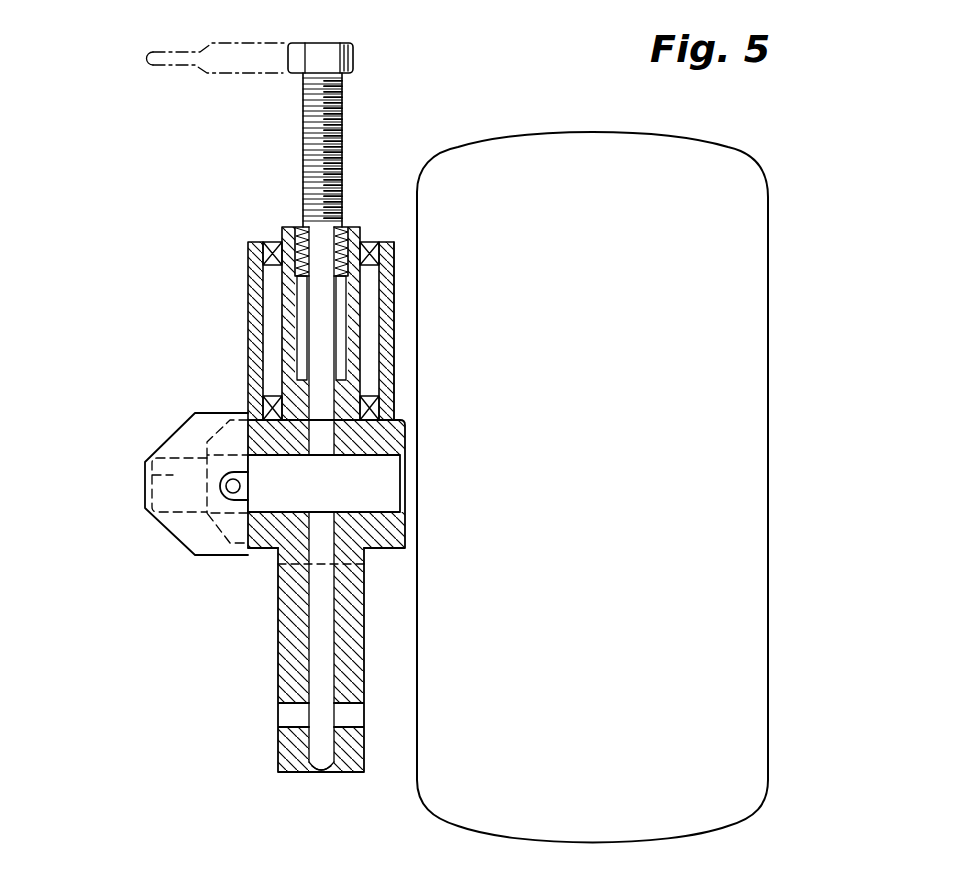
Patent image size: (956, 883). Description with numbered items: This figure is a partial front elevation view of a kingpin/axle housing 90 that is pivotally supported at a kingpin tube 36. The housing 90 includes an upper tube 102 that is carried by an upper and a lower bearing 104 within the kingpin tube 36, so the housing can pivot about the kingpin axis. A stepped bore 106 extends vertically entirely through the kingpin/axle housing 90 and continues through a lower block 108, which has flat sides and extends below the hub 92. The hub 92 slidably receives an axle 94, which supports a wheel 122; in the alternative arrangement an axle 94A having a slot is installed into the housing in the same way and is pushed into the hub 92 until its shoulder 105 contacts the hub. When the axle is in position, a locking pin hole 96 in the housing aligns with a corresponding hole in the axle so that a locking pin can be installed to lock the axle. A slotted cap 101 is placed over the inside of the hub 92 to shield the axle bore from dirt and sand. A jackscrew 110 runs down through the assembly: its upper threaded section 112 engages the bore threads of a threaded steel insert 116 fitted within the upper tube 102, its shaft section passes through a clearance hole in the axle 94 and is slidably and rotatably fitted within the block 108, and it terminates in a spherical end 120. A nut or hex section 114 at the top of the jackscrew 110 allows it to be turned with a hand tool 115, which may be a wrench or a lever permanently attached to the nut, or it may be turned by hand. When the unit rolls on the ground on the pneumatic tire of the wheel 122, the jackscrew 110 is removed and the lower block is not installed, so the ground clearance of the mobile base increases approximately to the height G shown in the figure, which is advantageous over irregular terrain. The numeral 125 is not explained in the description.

The kingpin tube 36 is at (256, 334).
The kingpin/axle housing 90 is at (238, 618).
The hub 92 is at (277, 555).
The axle 94 is at (387, 480).
The axle 94A is at (183, 438).
The locking pin hole 96 is at (226, 486).
The slotted cap 101 is at (140, 469).
The upper tube 102 is at (357, 227).
The bearing 104 is at (262, 252).
The shoulder 105 is at (395, 484).
The stepped bore 106 is at (303, 333).
The lower block 108 is at (288, 667).
The jackscrew 110 is at (325, 617).
The upper threaded section 112 is at (340, 86).
The nut or hex section 114 is at (353, 57).
The hand tool 115 is at (209, 42).
The threaded steel insert 116 is at (394, 298).
The spherical end 120 is at (322, 772).
The wheel 122 is at (752, 192).
The base 125 is at (293, 878).
The height G is at (272, 571).